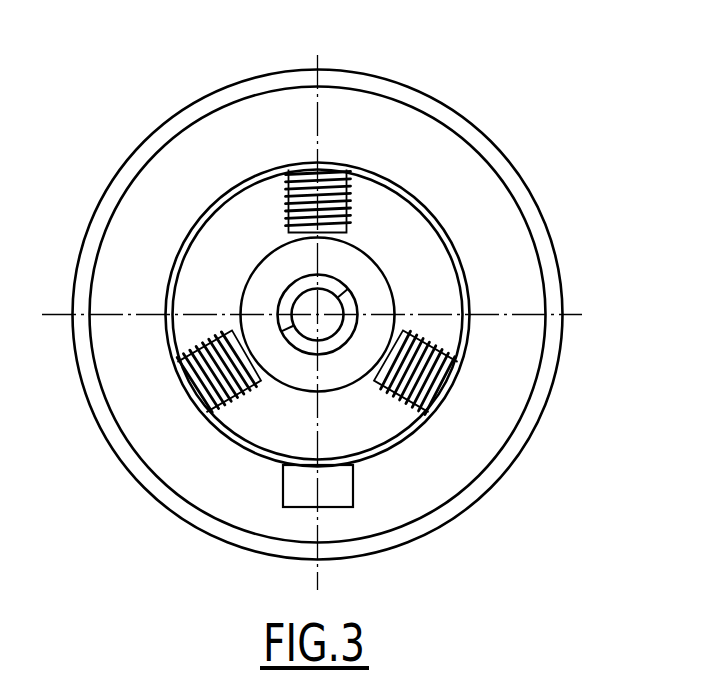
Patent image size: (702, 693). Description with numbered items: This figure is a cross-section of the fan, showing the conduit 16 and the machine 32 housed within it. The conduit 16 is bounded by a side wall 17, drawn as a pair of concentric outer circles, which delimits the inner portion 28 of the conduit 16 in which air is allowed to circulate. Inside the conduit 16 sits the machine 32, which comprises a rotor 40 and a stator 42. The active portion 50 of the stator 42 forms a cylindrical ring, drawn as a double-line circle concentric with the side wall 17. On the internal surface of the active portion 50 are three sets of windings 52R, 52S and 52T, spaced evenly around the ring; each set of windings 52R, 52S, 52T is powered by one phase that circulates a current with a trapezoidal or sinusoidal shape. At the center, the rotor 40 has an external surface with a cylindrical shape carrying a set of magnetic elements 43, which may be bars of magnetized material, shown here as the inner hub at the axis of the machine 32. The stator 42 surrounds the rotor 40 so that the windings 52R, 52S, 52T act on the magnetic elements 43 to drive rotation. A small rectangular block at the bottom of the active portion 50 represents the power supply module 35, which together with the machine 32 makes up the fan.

The conduit 16 is at (527, 212).
The side wall 17 is at (472, 133).
The inner portion 28 is at (388, 138).
The machine 32 is at (442, 223).
The active portion 50 is at (413, 268).
The rotor 40 is at (307, 358).
The stator 42 is at (360, 388).
The magnetic elements 43 is at (340, 290).
The power supply module 35 is at (318, 486).
The set of windings 52R is at (343, 154).
The set of windings 52S is at (458, 382).
The set of windings 52T is at (217, 370).